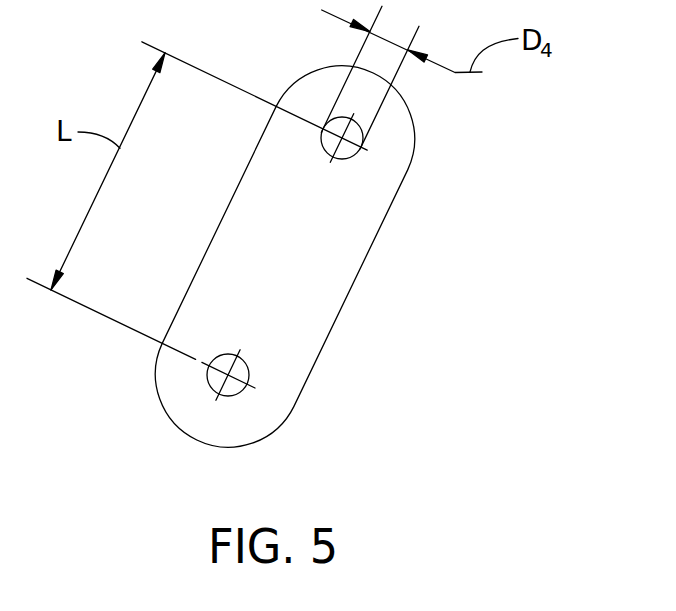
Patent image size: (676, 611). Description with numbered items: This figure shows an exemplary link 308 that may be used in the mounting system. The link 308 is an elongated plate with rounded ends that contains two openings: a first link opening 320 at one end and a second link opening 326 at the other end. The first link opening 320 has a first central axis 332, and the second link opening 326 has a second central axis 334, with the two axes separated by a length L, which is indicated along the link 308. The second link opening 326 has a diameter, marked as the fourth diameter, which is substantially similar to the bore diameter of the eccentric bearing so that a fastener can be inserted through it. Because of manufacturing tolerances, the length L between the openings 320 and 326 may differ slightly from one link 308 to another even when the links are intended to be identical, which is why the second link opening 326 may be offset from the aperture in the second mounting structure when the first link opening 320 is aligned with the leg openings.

The link 308 is at (359, 271).
The first link opening 320 is at (343, 159).
The second link opening 326 is at (235, 395).
The first central axis 332 is at (353, 148).
The second central axis 334 is at (249, 368).